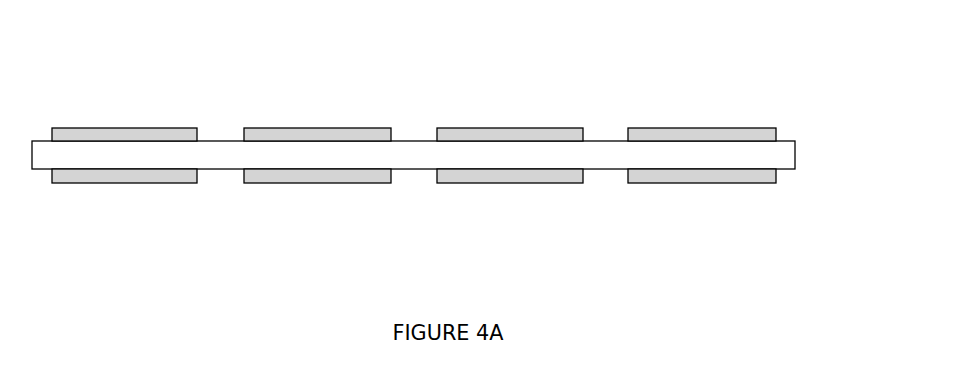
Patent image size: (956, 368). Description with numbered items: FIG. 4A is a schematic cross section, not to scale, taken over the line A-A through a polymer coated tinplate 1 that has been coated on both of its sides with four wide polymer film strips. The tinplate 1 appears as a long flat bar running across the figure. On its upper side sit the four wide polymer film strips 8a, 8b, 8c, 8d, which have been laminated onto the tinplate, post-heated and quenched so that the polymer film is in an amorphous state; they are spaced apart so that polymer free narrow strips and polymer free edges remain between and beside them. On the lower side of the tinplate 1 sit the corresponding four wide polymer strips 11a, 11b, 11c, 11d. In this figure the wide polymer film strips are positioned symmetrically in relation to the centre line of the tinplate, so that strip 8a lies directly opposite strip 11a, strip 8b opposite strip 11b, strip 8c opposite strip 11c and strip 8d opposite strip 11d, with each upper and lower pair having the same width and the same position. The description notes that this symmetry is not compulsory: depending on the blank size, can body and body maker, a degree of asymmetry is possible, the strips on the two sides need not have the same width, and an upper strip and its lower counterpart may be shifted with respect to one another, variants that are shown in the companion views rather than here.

The substrate 1 is at (436, 154).
The wide polymer film strip 8a is at (124, 128).
The wide polymer film strip 8b is at (317, 128).
The wide polymer film strip 8c is at (508, 128).
The wide polymer film strip 8d is at (702, 128).
The wide polymer strip 11a is at (123, 183).
The wide polymer strip 11b is at (317, 183).
The wide polymer strip 11c is at (509, 183).
The wide polymer strip 11d is at (702, 183).